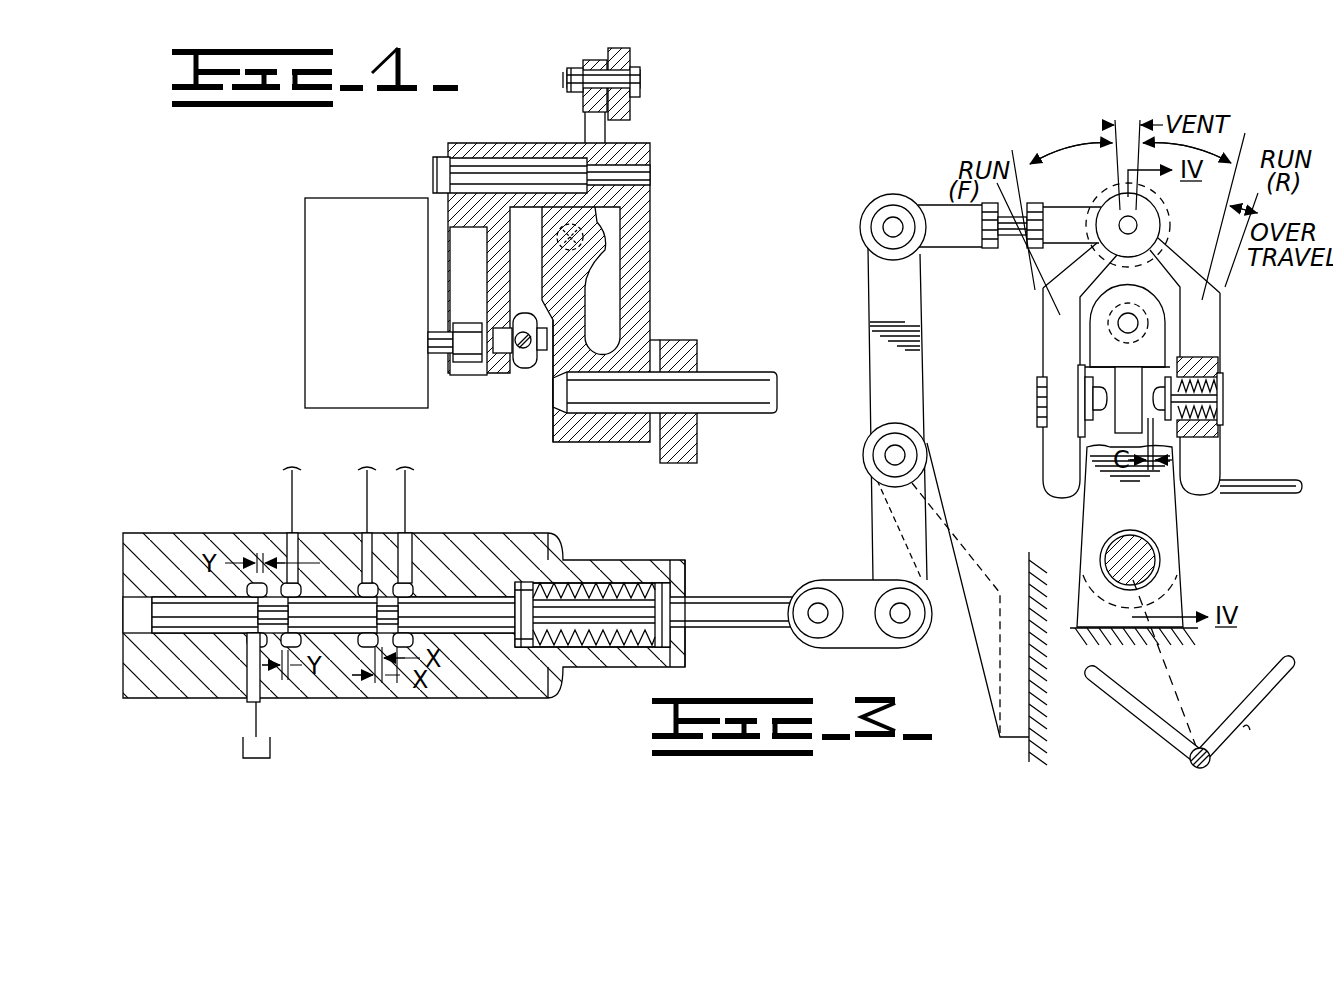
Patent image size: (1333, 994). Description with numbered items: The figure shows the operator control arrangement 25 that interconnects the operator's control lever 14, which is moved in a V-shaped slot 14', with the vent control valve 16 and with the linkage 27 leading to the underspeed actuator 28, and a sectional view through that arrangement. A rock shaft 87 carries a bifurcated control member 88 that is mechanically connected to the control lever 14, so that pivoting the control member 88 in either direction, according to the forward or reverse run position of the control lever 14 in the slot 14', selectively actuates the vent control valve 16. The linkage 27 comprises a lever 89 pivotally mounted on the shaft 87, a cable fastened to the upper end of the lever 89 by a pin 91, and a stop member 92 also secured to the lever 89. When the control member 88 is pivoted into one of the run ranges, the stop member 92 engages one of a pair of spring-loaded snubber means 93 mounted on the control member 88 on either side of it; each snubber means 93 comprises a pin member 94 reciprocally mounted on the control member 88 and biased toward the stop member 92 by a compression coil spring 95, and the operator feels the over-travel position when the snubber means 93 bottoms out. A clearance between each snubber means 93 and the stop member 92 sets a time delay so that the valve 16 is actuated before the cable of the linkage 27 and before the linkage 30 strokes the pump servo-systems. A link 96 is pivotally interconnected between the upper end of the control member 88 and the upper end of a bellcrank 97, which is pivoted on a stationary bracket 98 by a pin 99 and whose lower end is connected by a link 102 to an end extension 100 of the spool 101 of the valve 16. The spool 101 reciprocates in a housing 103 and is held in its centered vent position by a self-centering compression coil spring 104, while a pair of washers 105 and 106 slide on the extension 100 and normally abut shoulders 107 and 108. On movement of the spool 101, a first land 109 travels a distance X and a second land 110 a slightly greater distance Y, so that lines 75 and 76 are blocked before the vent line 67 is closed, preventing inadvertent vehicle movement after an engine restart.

In FIG. 3, the control lever 14 is at (1176, 766).
In FIG. 3, the V-shaped slot 14' is at (1266, 746).
In FIG. 3, the vent control valve 16 is at (362, 746).
In FIG. 3, the operator control arrangement 25 is at (846, 199).
In FIG. 3, the linkage 27 is at (1228, 659).
In FIG. 4, the underspeed actuator 28 is at (305, 255).
In FIG. 4, the linkage 30 is at (519, 375).
In FIG. 3, the linkage 30 is at (1239, 500).
In FIG. 3, the vent line 67 is at (290, 502).
In FIG. 3, the line 75 is at (410, 470).
In FIG. 3, the line 76 is at (365, 482).
In FIG. 4, the rock shaft 87 is at (733, 406).
In FIG. 3, the rock shaft 87 is at (1147, 567).
In FIG. 4, the bifurcated control member 88 is at (556, 360).
In FIG. 3, the bifurcated control member 88 is at (1212, 463).
In FIG. 4, the lever 89 is at (640, 263).
In FIG. 3, the lever 89 is at (1172, 525).
In FIG. 3, the pin 91 is at (1128, 315).
In FIG. 4, the stop member 92 is at (584, 288).
In FIG. 3, the stop member 92 is at (1118, 427).
In FIG. 3, the snubber means 93 is at (1026, 438).
In FIG. 3, the pin member 94 is at (1213, 394).
In FIG. 3, the compression coil spring 95 is at (1226, 353).
In FIG. 4, the link 96 is at (632, 63).
In FIG. 3, the link 96 is at (944, 240).
In FIG. 3, the bellcrank 97 is at (877, 292).
In FIG. 3, the stationary bracket 98 is at (965, 648).
In FIG. 3, the pin 99 is at (895, 455).
In FIG. 3, the end extension 100 is at (735, 594).
In FIG. 3, the spool 101 is at (454, 645).
In FIG. 3, the link 102 is at (838, 640).
In FIG. 3, the housing 103 is at (512, 537).
In FIG. 3, the self-centering compression coil spring 104 is at (602, 580).
In FIG. 3, the washer 105 is at (552, 543).
In FIG. 3, the washer 106 is at (683, 562).
In FIG. 3, the shoulder 107 is at (520, 632).
In FIG. 3, the shoulder 108 is at (680, 645).
In FIG. 3, the first land 109 is at (457, 606).
In FIG. 3, the second land 110 is at (343, 606).